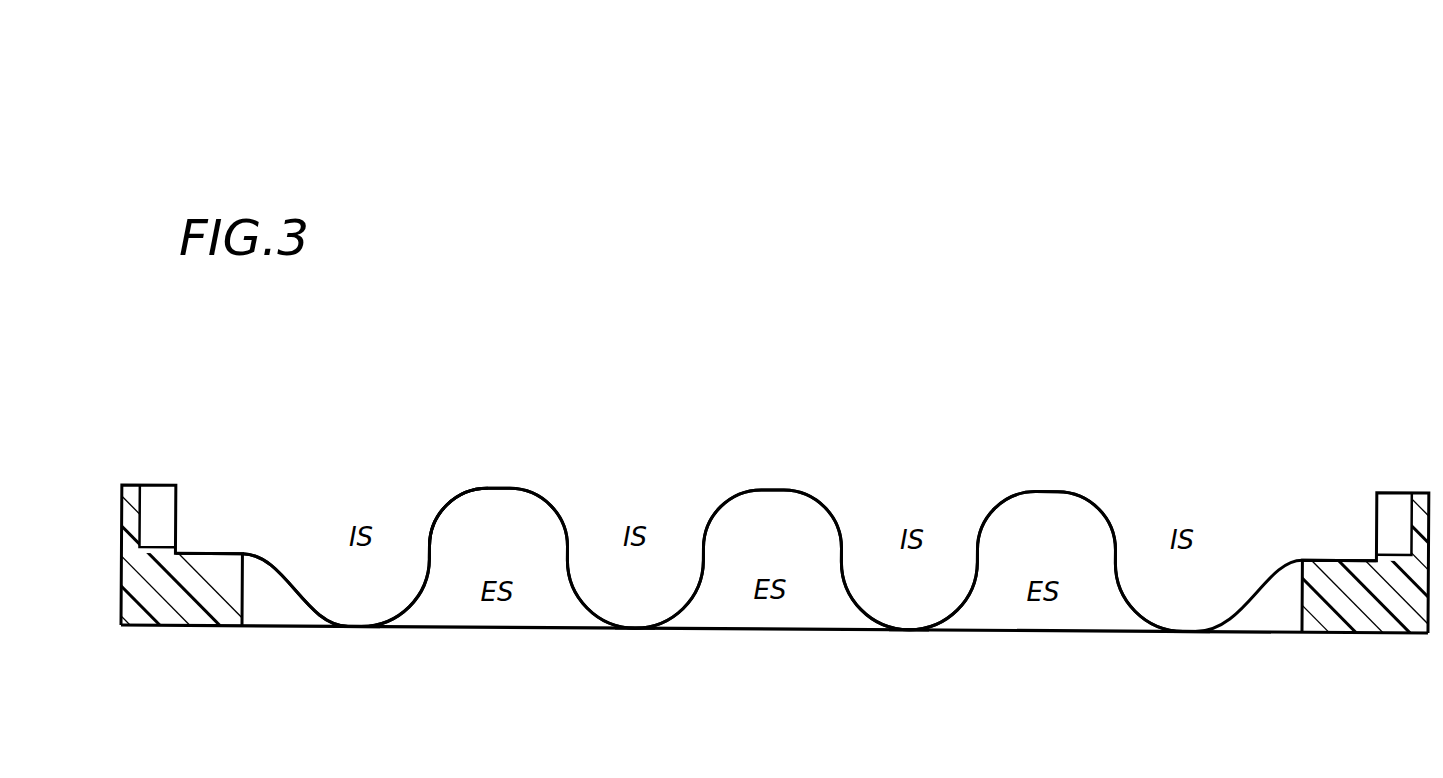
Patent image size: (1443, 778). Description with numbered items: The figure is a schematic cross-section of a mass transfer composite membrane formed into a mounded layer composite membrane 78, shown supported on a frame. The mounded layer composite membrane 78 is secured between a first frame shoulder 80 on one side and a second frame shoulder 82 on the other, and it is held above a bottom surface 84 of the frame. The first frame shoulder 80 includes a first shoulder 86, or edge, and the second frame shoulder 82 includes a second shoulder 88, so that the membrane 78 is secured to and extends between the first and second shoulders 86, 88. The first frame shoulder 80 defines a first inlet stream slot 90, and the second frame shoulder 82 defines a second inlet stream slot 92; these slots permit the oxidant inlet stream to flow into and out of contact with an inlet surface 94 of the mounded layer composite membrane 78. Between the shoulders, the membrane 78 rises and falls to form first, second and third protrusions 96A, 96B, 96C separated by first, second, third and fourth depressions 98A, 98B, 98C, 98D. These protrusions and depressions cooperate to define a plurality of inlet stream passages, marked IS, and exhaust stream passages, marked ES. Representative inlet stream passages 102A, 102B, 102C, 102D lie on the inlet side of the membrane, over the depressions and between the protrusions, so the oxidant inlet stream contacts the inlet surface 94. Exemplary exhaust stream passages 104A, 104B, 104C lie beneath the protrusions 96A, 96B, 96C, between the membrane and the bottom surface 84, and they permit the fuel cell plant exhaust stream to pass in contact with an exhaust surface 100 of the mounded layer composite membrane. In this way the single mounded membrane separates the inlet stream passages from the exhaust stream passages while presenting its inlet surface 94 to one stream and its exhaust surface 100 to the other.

The mounded layer composite membrane 78 is at (1115, 517).
The first frame shoulder 80 is at (158, 605).
The second frame shoulder 82 is at (1348, 605).
The bottom surface 84 is at (1077, 633).
The first shoulder 86 is at (203, 553).
The second shoulder 88 is at (1358, 562).
The first inlet stream slot 90 is at (153, 502).
The second inlet stream slot 92 is at (1396, 527).
The inlet surface 94 is at (436, 532).
The first protrusion 96A is at (502, 488).
The second protrusion 96B is at (780, 490).
The third protrusion 96C is at (1053, 492).
The first depression 98A is at (410, 606).
The second depression 98B is at (680, 610).
The third depression 98C is at (862, 610).
The fourth depression 98D is at (1226, 618).
The exhaust surface 100 is at (303, 608).
The inlet stream passage 102A is at (348, 570).
The inlet stream passage 102B is at (650, 570).
The inlet stream passage 102C is at (928, 572).
The inlet stream passage 102D is at (1212, 578).
The exhaust stream passage 104A is at (528, 548).
The exhaust stream passage 104B is at (803, 550).
The exhaust stream passage 104C is at (1018, 553).